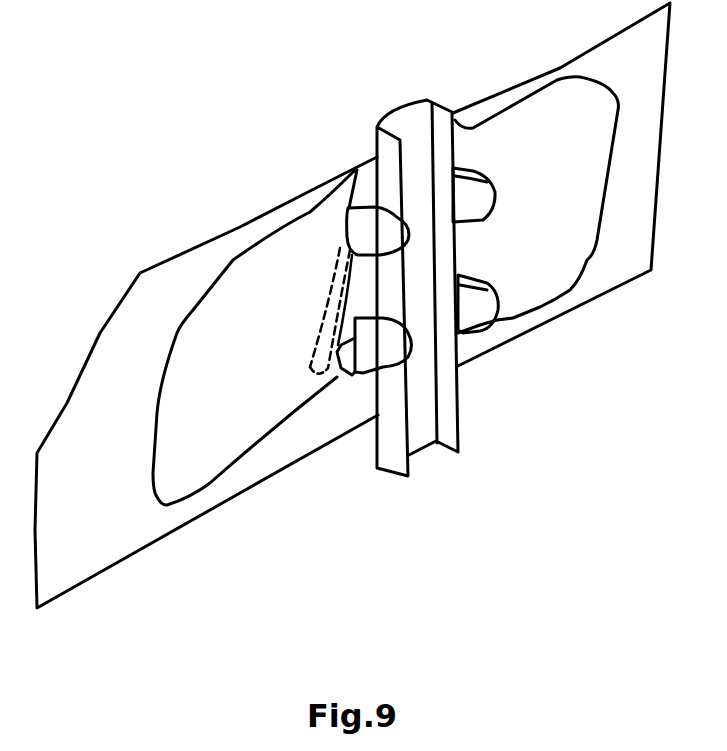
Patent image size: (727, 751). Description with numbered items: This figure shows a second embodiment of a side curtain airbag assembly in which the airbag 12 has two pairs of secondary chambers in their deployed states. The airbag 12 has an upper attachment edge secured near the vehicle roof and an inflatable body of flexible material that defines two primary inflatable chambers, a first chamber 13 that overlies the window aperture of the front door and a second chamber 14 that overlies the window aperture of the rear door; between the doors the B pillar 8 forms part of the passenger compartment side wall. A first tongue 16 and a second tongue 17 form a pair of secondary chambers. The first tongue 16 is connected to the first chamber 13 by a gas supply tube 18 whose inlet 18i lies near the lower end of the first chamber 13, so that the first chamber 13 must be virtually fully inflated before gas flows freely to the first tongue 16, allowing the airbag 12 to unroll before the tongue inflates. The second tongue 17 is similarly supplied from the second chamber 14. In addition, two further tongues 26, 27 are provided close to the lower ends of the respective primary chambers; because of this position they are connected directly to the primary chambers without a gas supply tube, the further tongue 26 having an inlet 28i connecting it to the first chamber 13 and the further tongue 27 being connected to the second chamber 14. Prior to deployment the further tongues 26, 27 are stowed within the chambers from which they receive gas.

The B pillar 8 is at (390, 110).
The airbag 12 is at (140, 272).
The first chamber 13 is at (233, 260).
The second chamber 14 is at (562, 297).
The first tongue 16 is at (365, 207).
The second tongue 17 is at (470, 170).
The gas supply tube 18 is at (326, 277).
The inlet 18i is at (309, 379).
The further tongue 26 is at (381, 383).
The further tongue 27 is at (473, 333).
The inlet 28i is at (334, 374).